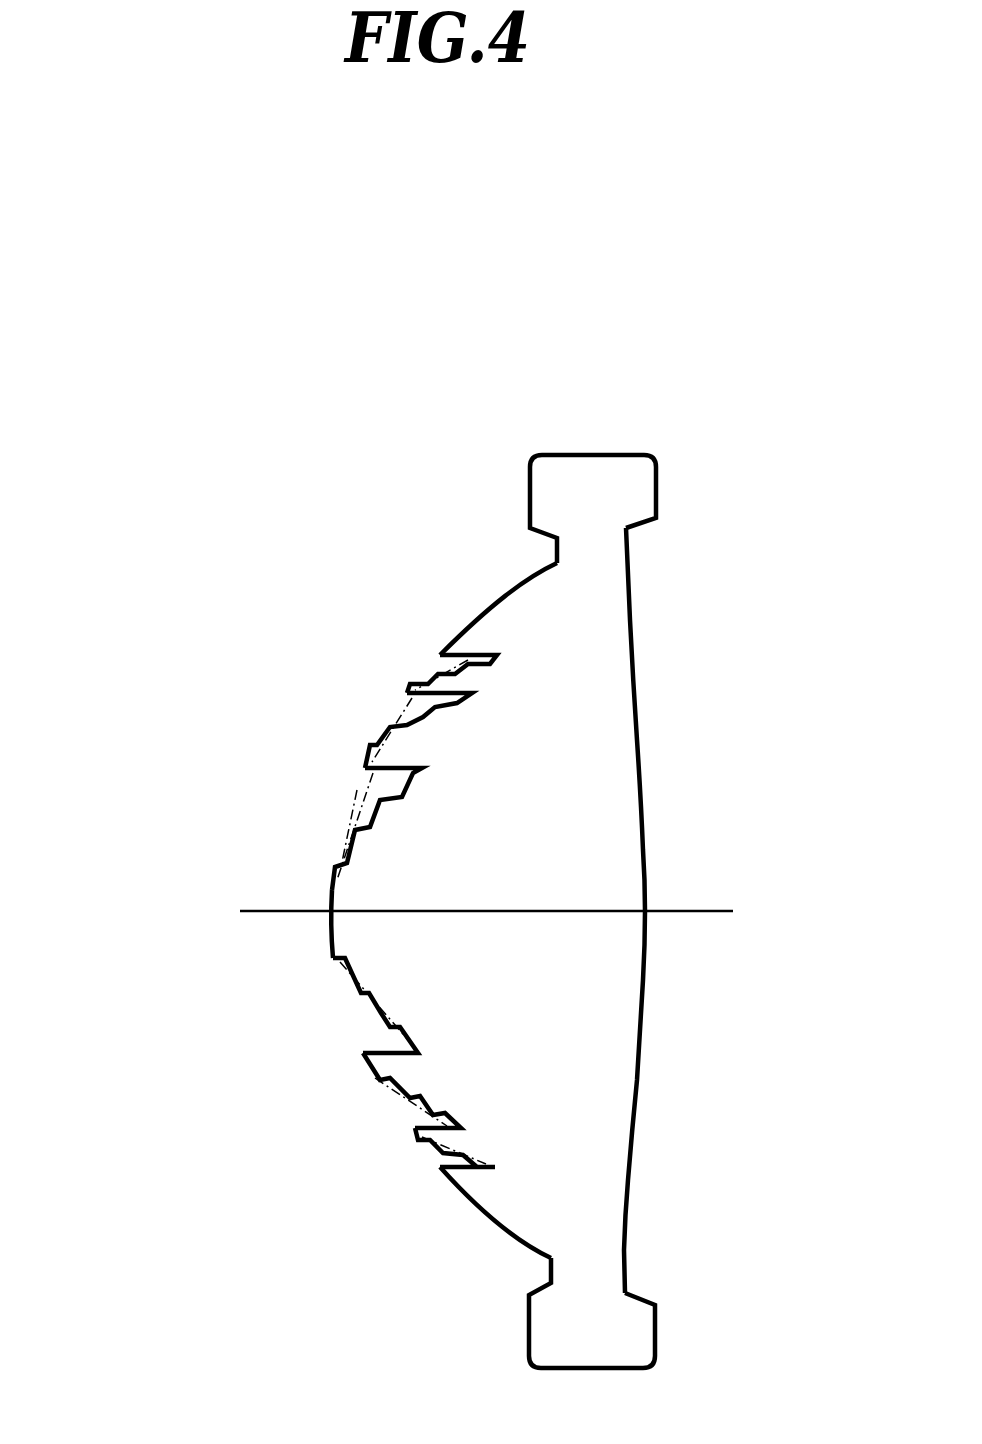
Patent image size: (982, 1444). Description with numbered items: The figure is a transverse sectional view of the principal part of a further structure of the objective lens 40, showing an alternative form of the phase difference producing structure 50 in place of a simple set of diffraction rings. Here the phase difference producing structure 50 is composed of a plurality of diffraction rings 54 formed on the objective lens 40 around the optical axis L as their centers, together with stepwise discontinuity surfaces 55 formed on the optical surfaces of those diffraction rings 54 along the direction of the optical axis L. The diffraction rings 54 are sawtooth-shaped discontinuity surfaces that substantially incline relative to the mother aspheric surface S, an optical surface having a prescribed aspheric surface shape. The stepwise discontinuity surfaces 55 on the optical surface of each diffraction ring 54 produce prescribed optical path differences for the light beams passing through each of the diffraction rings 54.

The objective lens 40 is at (590, 473).
The phase difference producing structure 50 is at (268, 642).
The mother aspheric surface S is at (352, 785).
The optical axis L is at (677, 911).
The diffraction rings 54 is at (422, 1157).
The stepwise discontinuity surfaces 55 is at (333, 948).